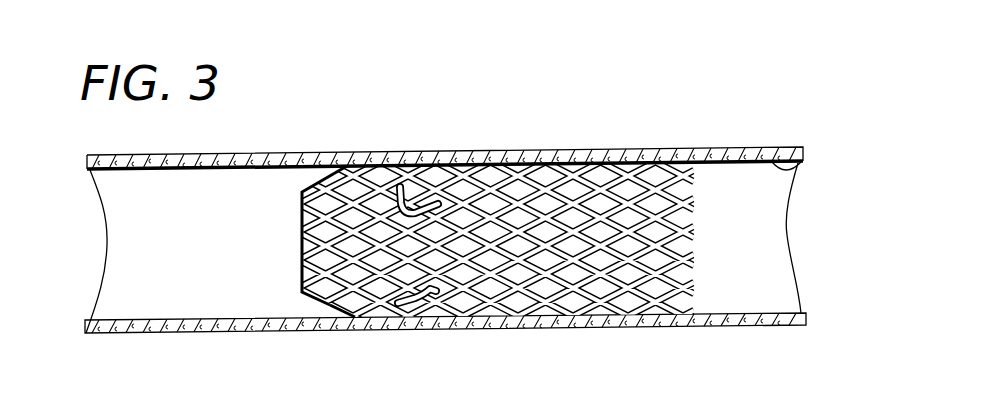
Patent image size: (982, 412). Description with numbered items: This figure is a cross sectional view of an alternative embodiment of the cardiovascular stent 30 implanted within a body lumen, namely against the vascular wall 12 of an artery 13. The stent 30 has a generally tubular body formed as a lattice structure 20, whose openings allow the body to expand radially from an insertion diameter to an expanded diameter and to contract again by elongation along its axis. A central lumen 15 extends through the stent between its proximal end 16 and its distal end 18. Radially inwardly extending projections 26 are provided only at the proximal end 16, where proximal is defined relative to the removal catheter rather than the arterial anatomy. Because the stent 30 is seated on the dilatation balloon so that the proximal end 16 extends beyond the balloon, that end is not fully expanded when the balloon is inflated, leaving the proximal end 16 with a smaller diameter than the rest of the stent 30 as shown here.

The vascular wall 12 is at (778, 171).
The artery 13 is at (86, 333).
The central lumen 15 is at (516, 218).
The proximal end 16 is at (300, 244).
The distal end 18 is at (692, 190).
The lattice structure 20 is at (514, 300).
The radially inwardly extending projections 26 is at (396, 184).
The cardiovascular stent 30 is at (594, 207).